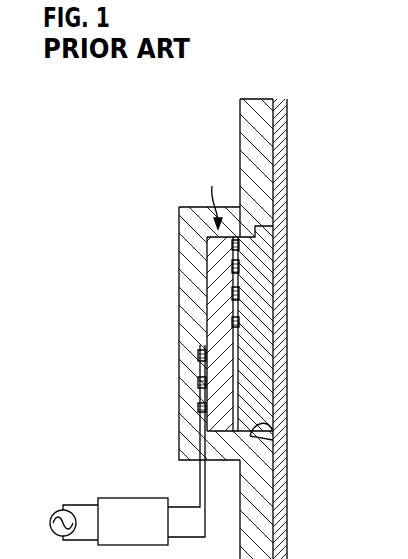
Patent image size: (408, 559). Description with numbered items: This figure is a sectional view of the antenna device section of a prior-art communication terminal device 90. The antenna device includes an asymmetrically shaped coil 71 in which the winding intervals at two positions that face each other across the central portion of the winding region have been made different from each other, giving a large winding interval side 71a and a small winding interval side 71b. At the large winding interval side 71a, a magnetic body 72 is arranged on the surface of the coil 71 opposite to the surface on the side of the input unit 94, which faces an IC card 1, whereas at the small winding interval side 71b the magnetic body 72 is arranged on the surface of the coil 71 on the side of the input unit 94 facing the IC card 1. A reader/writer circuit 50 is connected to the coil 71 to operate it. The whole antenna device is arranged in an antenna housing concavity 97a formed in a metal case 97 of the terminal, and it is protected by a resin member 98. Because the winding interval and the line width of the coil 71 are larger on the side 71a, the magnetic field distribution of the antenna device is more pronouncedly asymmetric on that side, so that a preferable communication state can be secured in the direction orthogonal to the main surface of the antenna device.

The IC card 1 is at (276, 535).
The reader/writer circuit 50 is at (133, 498).
The coil 71 is at (143, 387).
The large winding interval side 71a is at (233, 318).
The small winding interval side 71b is at (200, 383).
The magnetic body 72 is at (183, 255).
The communication terminal device 90 is at (211, 197).
The input unit 94 is at (285, 135).
The metal case 97 is at (240, 143).
The antenna housing concavity 97a is at (273, 428).
The resin member 98 is at (262, 272).